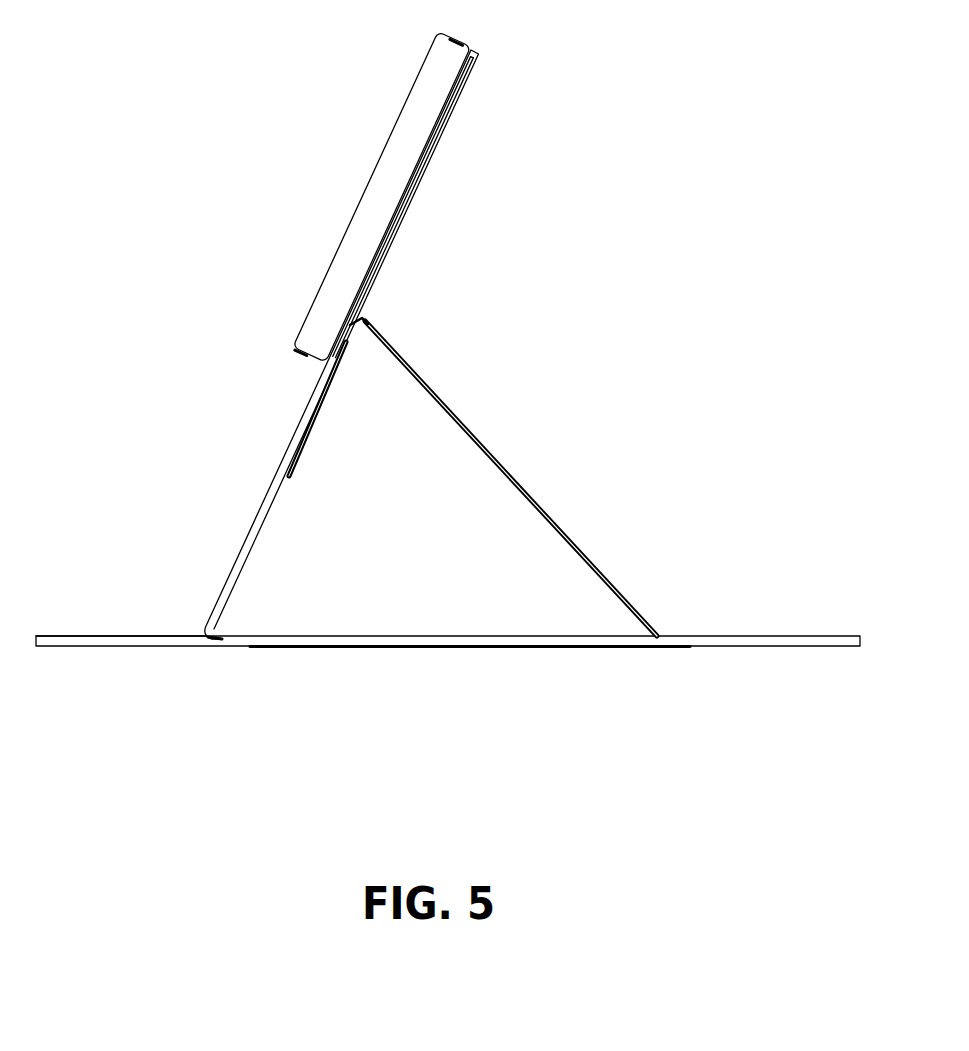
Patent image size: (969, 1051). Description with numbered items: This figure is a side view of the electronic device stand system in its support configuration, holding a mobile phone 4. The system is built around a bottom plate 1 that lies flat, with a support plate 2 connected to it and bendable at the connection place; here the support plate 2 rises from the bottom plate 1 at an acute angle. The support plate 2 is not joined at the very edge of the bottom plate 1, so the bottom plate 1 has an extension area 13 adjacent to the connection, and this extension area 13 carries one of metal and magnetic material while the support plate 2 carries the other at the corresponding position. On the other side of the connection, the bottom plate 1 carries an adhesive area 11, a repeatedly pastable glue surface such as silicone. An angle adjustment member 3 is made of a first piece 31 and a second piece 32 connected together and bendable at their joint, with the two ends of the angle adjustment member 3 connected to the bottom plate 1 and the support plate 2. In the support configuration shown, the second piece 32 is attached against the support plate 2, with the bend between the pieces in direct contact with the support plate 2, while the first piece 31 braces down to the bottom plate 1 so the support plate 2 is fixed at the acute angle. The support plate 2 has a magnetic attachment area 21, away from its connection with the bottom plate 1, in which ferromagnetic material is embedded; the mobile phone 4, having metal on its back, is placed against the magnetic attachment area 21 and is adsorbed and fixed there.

The bottom plate 1 is at (763, 648).
The adhesive area 11 is at (483, 650).
The extension area 13 is at (75, 648).
The support plate 2 is at (270, 490).
The magnetic attachment area 21 is at (453, 95).
The angle adjustment member 3 is at (473, 476).
The first piece 31 is at (452, 410).
The second piece 32 is at (338, 372).
The mobile phone 4 is at (377, 218).